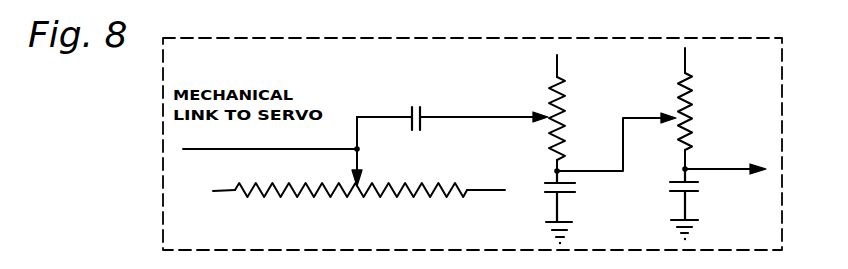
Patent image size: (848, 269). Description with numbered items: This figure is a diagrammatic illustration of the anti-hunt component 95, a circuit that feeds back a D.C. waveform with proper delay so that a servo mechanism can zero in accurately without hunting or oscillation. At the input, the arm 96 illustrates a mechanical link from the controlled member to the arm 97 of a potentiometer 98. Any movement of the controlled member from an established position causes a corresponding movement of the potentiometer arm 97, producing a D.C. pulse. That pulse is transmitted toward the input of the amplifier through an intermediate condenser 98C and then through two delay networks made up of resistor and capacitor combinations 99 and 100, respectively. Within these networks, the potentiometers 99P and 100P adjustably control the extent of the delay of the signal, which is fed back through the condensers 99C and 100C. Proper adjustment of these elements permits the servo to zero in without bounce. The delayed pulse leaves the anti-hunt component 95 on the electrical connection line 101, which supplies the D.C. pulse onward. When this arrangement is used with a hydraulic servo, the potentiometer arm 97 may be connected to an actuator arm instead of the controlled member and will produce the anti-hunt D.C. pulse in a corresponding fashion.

The anti-hunt component 95 is at (351, 38).
The arm 96 is at (250, 149).
The arm 97 is at (360, 157).
The potentiometer 98 is at (320, 192).
The intermediate condenser 98C is at (413, 107).
The resistor and capacitor combination 99 is at (562, 111).
The potentiometer 99P is at (553, 140).
The condenser 99C is at (570, 192).
The resistor and capacitor combination 100 is at (701, 96).
The potentiometer 100P is at (695, 130).
The condenser 100C is at (698, 191).
The electrical connection line 101 is at (705, 167).